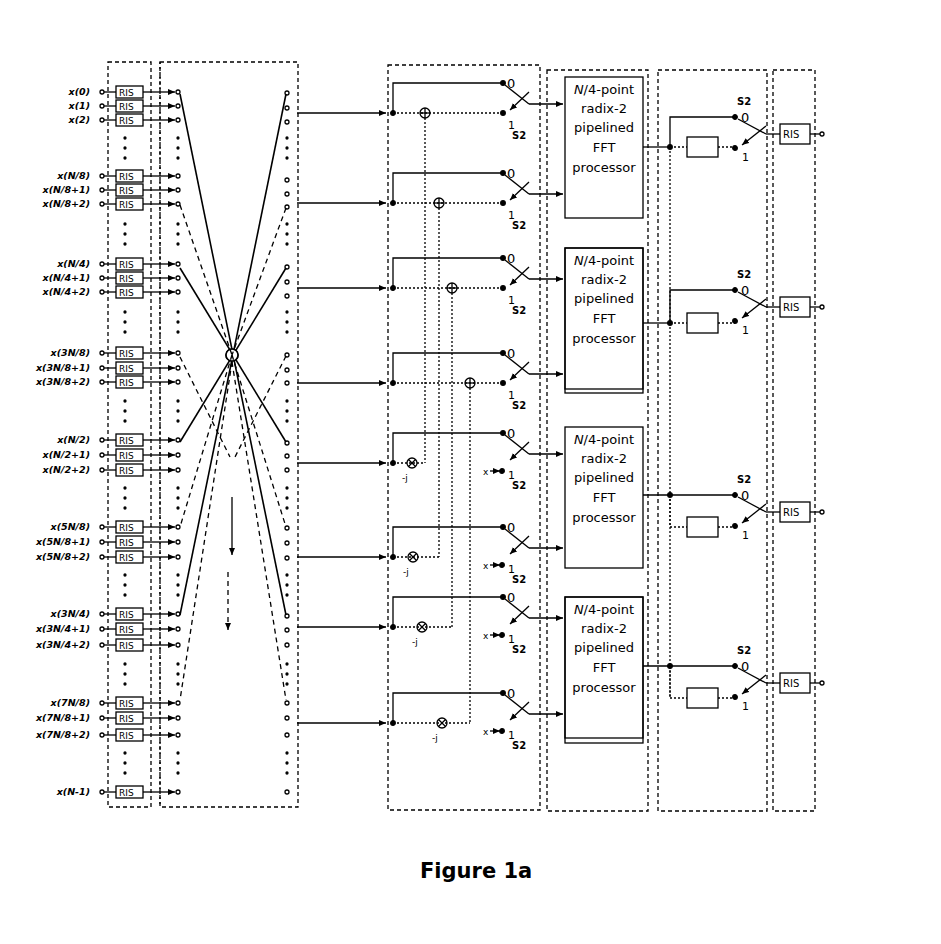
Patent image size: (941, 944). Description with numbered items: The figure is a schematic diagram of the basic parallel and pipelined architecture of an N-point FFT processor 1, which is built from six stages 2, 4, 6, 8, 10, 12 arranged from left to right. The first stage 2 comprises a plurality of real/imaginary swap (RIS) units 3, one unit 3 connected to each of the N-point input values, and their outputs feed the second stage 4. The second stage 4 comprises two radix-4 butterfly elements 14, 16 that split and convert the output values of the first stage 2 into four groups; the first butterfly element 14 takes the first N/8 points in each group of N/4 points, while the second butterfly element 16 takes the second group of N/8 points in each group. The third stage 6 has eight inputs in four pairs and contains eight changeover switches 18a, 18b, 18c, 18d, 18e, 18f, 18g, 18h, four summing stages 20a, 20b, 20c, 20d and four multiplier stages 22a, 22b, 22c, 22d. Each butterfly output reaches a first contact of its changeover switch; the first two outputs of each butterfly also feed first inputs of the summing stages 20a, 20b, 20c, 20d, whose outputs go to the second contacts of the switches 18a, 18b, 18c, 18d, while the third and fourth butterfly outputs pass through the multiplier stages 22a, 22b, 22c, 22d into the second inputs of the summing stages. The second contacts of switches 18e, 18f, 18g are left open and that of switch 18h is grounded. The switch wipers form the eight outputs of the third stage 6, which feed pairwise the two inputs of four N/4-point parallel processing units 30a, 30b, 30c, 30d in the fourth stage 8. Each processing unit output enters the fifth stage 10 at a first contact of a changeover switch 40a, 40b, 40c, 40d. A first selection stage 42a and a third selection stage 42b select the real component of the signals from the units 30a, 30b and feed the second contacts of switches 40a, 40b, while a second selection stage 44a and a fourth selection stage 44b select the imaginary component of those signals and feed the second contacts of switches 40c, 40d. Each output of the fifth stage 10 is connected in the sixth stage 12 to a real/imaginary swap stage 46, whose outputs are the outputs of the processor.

The processor 1 is at (333, 80).
The first stage 2 is at (110, 812).
The real/imaginary swap (RIS) unit 3 is at (130, 84).
The second stage 4 is at (258, 810).
The third stage 6 is at (405, 812).
The fourth stage 8 is at (618, 812).
The fifth stage 10 is at (690, 812).
The sixth stage 12 is at (810, 812).
The first butterfly element 14 is at (193, 133).
The second butterfly element 16 is at (181, 683).
The first changeover switch 18a is at (536, 82).
The second changeover switch 18b is at (530, 177).
The third changeover switch 18c is at (530, 262).
The fourth changeover switch 18d is at (530, 348).
The fifth changeover switch 18e is at (530, 430).
The sixth changeover switch 18f is at (530, 522).
The seventh changeover switch 18g is at (530, 598).
The eighth changeover switch 18h is at (530, 693).
The first summing stage 20a is at (430, 108).
The second summing stage 20b is at (441, 199).
The third summing stage 20c is at (455, 284).
The fourth summing stage 20d is at (471, 379).
The first multiplier stage 22a is at (416, 470).
The second multiplier stage 22b is at (417, 564).
The third multiplier stage 22c is at (426, 634).
The fourth multiplier stage 22d is at (446, 730).
The first processing unit 30a is at (632, 77).
The second processing unit 30b is at (600, 248).
The third processing unit 30c is at (595, 427).
The fourth processing unit 30d is at (598, 598).
The first changeover switch 40a is at (752, 112).
The second changeover switch 40b is at (752, 288).
The third changeover switch 40c is at (752, 492).
The fourth changeover switch 40d is at (752, 663).
The first selection stage 42a is at (700, 158).
The third selection stage 42b is at (700, 334).
The second selection stage 44a is at (700, 538).
The fourth selection stage 44b is at (700, 709).
The real/imaginary swap stage 46 is at (795, 146).